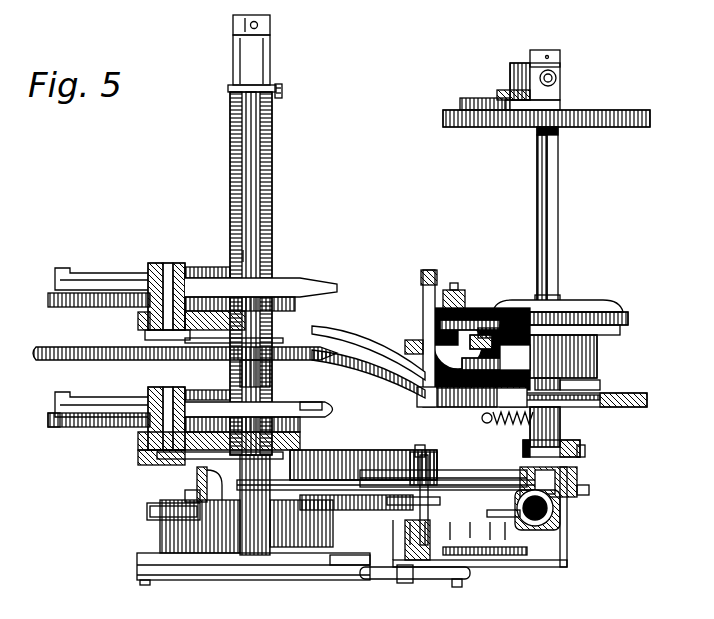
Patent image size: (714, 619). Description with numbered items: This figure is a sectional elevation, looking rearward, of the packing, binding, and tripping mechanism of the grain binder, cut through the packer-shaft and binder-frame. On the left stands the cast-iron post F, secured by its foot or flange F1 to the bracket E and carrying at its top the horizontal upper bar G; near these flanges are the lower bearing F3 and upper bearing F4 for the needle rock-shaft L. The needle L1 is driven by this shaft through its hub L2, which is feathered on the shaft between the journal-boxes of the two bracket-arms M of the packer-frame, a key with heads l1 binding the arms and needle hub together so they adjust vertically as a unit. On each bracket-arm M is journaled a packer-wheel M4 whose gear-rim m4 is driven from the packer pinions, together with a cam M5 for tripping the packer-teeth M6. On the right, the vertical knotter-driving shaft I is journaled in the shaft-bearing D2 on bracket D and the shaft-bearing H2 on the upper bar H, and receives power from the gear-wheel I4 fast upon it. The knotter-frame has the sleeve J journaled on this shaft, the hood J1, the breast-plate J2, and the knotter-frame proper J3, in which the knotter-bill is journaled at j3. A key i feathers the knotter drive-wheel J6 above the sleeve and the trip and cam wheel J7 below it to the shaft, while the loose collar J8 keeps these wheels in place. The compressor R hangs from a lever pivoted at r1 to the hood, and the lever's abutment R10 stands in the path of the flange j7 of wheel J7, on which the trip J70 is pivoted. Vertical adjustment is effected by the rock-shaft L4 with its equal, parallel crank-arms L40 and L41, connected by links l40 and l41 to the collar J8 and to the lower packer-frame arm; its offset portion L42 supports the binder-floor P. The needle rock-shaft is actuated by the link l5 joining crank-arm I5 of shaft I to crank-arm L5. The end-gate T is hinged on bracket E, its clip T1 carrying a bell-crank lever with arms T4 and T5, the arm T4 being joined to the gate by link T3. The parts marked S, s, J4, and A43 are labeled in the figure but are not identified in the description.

The upper bearing F4 is at (248, 38).
The horizontal upper bar G is at (283, 91).
The post F is at (273, 148).
The needle rock-shaft L is at (250, 173).
The head of key l1 is at (229, 253).
The bracket-arm of packer-frame M is at (268, 276).
The needle L1 is at (283, 346).
The compressor R is at (368, 356).
The stop S is at (424, 351).
The breast-plate J2 is at (422, 296).
The grainwardly-extended portion of knotter-frame J3 is at (440, 291).
The knotter-bill journal j3 is at (482, 322).
The pivot of compressor lever r1 is at (505, 325).
The key i is at (559, 289).
The knotter drive-wheel J6 is at (607, 310).
The knotter-driving shaft I is at (559, 233).
The gear-wheel I4 is at (630, 112).
The upper bar H is at (510, 80).
The shaft-bearing H2 is at (560, 79).
The sleeve J is at (593, 332).
The hood J1 is at (598, 357).
The spring s is at (600, 390).
The collar J4 is at (559, 389).
The flange of trip-wheel j7 is at (647, 398).
The packer-wheel M4 is at (99, 411).
The gear-rim m4 is at (52, 430).
The cam M5 is at (245, 413).
The needle hub L2 is at (268, 363).
The packer-teeth M6 is at (310, 408).
The binder-floor P is at (343, 477).
The end-gate T is at (380, 470).
The link T3 is at (423, 452).
The arm of bell-crank lever T4 is at (426, 448).
The clip T1 is at (430, 506).
The arm of bell-crank lever T5 is at (412, 541).
The abutment R10 is at (482, 418).
The trip J70 is at (515, 425).
The trip and cam wheel J7 is at (562, 418).
The collar J8 is at (581, 453).
The link l40 is at (588, 445).
The rock-shaft L4 is at (470, 471).
The crank-arm L40 is at (590, 489).
The bracket D is at (550, 506).
The shaft-bearing D2 is at (566, 540).
The crank-arm I5 is at (509, 562).
The crank-arm L5 is at (207, 560).
The link l5 is at (350, 566).
The offset portion L42 is at (394, 525).
The nut A43 is at (457, 588).
The foot or flange F1 is at (175, 498).
The link l41 is at (192, 494).
The bracket E is at (147, 511).
The lower bearing F3 is at (240, 493).
The crank-arm L41 is at (237, 497).